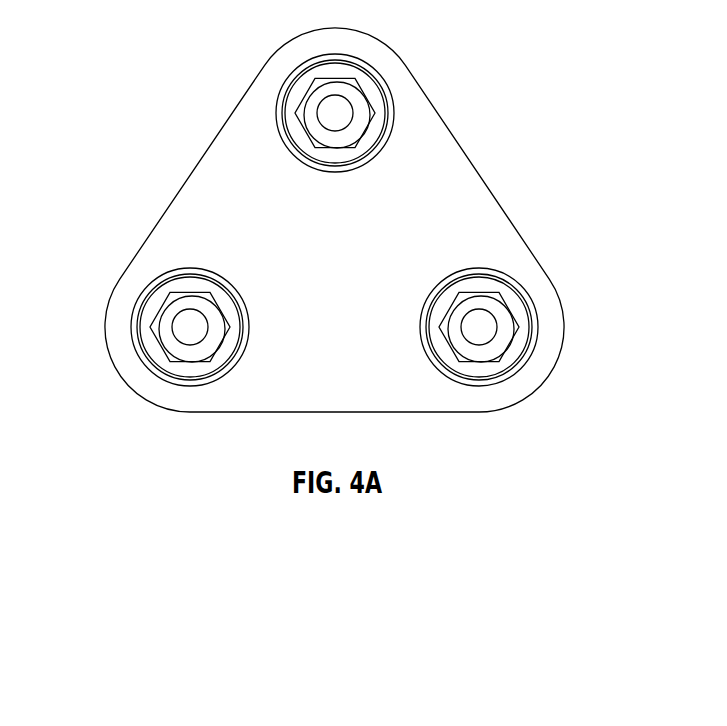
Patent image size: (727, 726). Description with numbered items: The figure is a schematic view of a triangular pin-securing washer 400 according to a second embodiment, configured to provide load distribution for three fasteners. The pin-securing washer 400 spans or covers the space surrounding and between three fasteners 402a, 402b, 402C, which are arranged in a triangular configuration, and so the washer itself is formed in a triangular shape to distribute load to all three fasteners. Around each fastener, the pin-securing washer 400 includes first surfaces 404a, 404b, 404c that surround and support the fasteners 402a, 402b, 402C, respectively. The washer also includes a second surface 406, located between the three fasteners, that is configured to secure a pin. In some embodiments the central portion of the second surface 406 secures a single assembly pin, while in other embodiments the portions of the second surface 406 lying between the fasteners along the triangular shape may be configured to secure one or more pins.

The pin-securing washer 400 is at (200, 160).
The fastener 402a is at (308, 93).
The fastener 402b is at (160, 310).
The fastener 402C is at (498, 312).
The first surface 404a is at (367, 48).
The first surface 404b is at (142, 378).
The first surface 404c is at (515, 387).
The second surface 406 is at (354, 266).